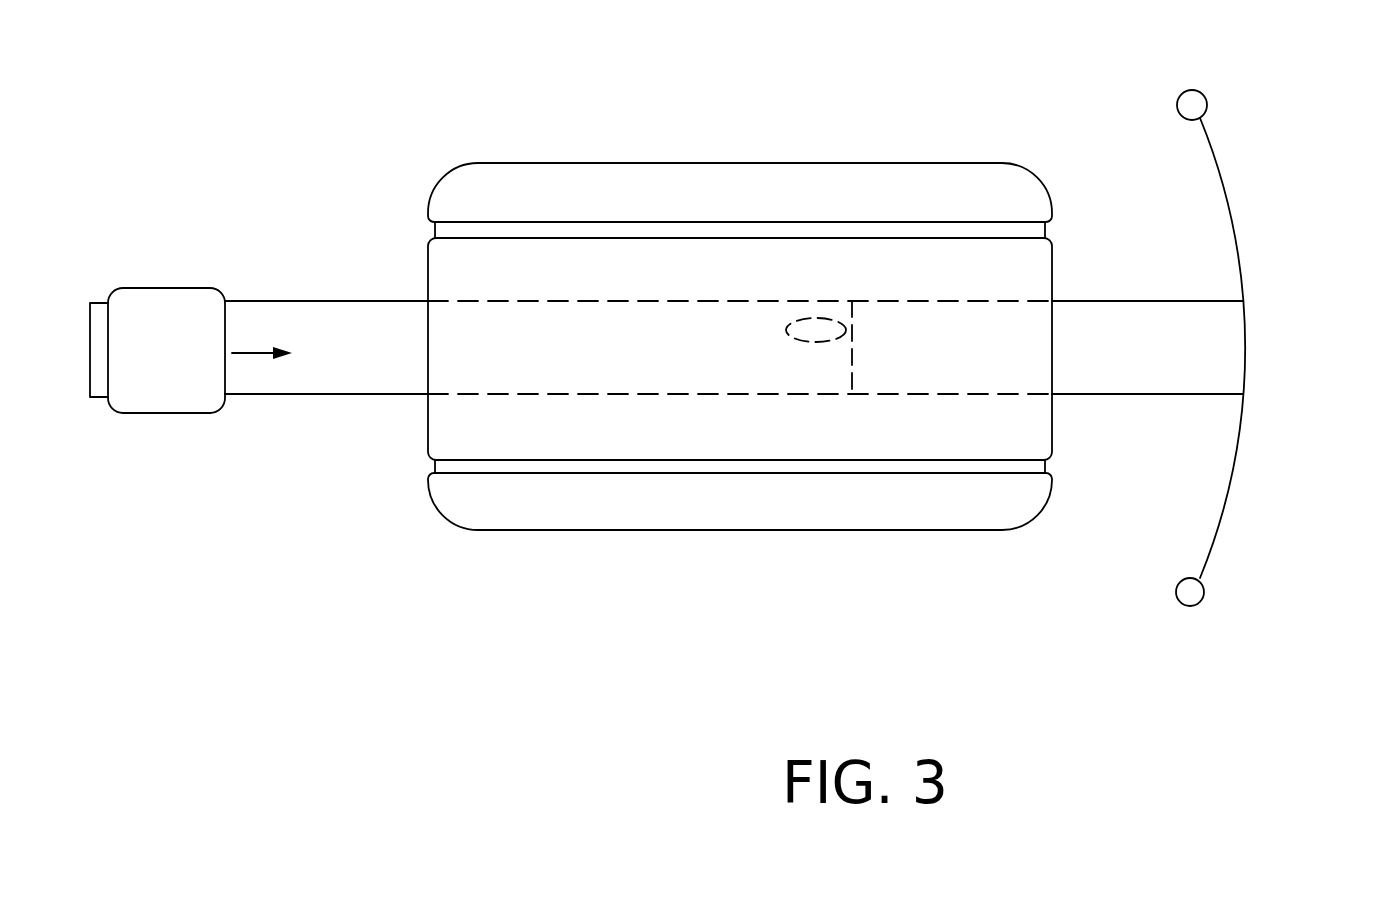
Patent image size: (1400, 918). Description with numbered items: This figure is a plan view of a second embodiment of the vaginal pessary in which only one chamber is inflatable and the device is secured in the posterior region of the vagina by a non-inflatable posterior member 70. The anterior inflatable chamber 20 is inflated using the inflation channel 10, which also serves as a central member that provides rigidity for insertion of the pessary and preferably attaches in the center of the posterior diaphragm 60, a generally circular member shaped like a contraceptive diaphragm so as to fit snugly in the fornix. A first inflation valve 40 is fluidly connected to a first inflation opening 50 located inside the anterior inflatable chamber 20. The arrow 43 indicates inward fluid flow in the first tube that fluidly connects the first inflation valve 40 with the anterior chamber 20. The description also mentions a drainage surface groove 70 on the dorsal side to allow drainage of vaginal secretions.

The inflation channel 10 is at (362, 282).
The anterior inflatable chamber 20 is at (792, 150).
The first inflation valve 40 is at (124, 408).
The arrow 43 is at (250, 353).
The first inflation opening 50 is at (786, 333).
The diaphragm 60 is at (875, 473).
The non-inflatable posterior member 70 is at (1358, 102).